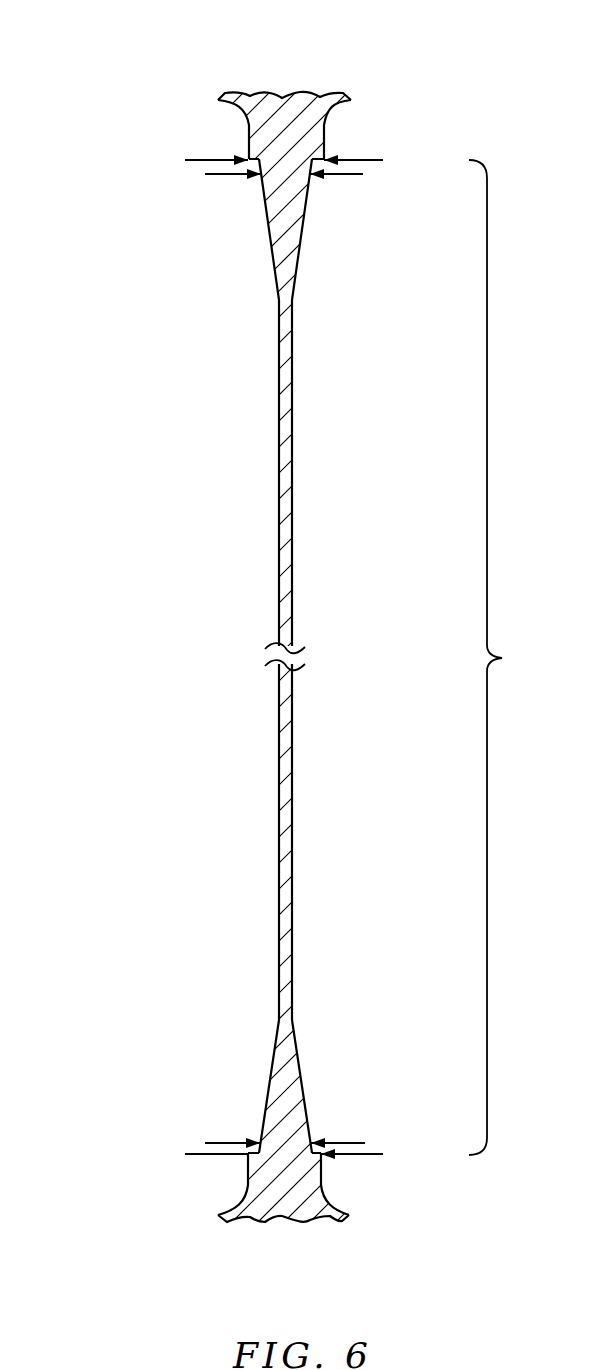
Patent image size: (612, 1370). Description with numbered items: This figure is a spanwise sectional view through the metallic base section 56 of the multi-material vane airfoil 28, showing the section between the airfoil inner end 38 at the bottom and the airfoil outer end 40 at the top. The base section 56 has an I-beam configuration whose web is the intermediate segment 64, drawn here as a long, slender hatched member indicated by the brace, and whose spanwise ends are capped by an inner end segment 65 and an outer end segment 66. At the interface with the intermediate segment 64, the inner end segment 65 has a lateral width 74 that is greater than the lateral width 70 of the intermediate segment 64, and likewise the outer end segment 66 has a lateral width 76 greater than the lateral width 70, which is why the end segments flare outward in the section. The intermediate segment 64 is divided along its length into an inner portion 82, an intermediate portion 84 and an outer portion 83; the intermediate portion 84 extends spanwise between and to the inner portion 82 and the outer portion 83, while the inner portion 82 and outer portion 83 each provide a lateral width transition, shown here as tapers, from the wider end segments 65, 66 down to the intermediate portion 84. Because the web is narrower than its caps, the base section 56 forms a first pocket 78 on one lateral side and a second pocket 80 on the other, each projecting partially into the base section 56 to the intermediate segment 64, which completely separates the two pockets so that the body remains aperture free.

The airfoil base section 56 is at (376, 71).
The airfoil outer end 40 is at (242, 93).
The outer end segment 66 is at (362, 134).
The lateral width 76 is at (200, 159).
The vane airfoil 28 is at (166, 156).
The lateral width 70 is at (343, 178).
The outer portion 83 is at (249, 241).
The intermediate portion 84 is at (244, 463).
The first pocket 78 is at (261, 533).
The second pocket 80 is at (308, 530).
The intermediate segment 64 is at (503, 657).
The inner portion 82 is at (258, 1067).
The lateral width 74 is at (200, 1157).
The inner end segment 65 is at (362, 1192).
The airfoil inner end 38 is at (240, 1223).